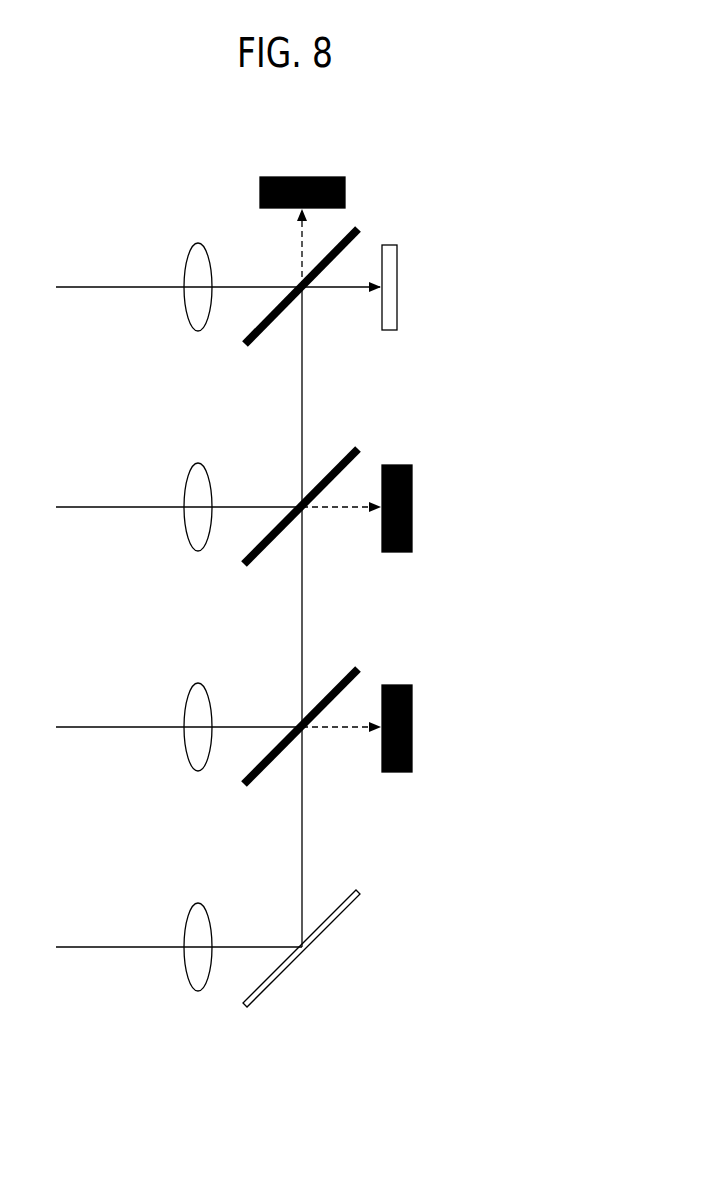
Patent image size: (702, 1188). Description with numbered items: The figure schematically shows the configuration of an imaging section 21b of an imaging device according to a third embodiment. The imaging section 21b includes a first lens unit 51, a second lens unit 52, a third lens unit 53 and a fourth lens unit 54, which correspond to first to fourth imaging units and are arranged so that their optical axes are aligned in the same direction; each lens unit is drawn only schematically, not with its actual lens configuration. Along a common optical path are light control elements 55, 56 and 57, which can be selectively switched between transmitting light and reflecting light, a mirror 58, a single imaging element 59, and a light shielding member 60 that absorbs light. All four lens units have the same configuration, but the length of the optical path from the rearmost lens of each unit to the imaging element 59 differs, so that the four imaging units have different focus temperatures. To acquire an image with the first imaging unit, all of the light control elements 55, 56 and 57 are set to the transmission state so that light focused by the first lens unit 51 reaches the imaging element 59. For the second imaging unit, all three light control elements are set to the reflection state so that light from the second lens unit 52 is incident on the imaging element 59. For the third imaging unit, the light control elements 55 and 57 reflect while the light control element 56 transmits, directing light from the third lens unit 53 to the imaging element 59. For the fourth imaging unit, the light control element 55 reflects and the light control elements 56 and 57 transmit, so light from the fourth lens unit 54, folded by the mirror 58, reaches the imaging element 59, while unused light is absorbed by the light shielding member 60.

The imaging section 21b is at (478, 167).
The first lens unit 51 is at (188, 252).
The second lens unit 52 is at (188, 472).
The third lens unit 53 is at (188, 692).
The fourth lens unit 54 is at (188, 912).
The light control element 55 is at (350, 250).
The light control element 56 is at (350, 470).
The light control element 57 is at (350, 690).
The mirror 58 is at (352, 908).
The imaging element 59 is at (398, 319).
The light shielding member 60 is at (320, 177).